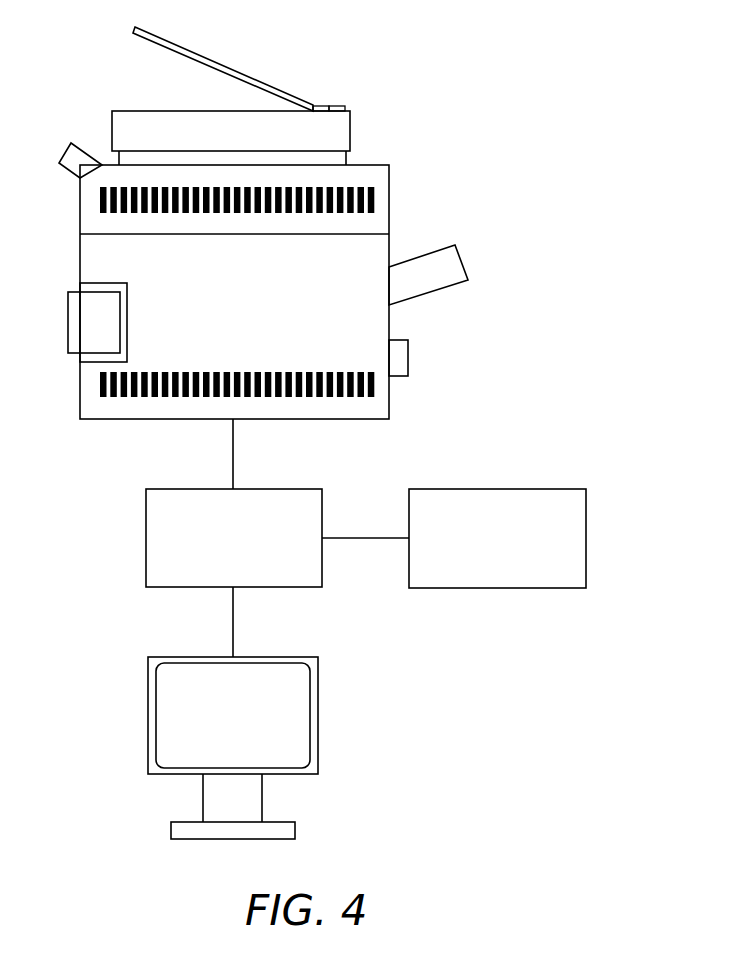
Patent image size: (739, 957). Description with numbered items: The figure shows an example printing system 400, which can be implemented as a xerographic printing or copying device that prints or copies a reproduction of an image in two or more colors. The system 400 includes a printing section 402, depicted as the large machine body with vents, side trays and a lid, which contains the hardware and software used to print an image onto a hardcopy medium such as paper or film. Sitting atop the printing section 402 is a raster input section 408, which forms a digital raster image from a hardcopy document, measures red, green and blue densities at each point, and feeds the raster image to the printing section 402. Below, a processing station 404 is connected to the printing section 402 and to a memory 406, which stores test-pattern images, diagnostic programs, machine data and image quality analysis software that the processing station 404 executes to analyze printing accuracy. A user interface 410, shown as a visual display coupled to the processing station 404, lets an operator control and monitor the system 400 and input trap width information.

The printing system 400 is at (488, 120).
The printing section 402 is at (297, 283).
The processing station 404 is at (146, 539).
The memory 406 is at (503, 489).
The raster input section 408 is at (332, 134).
The user interface 410 is at (167, 714).